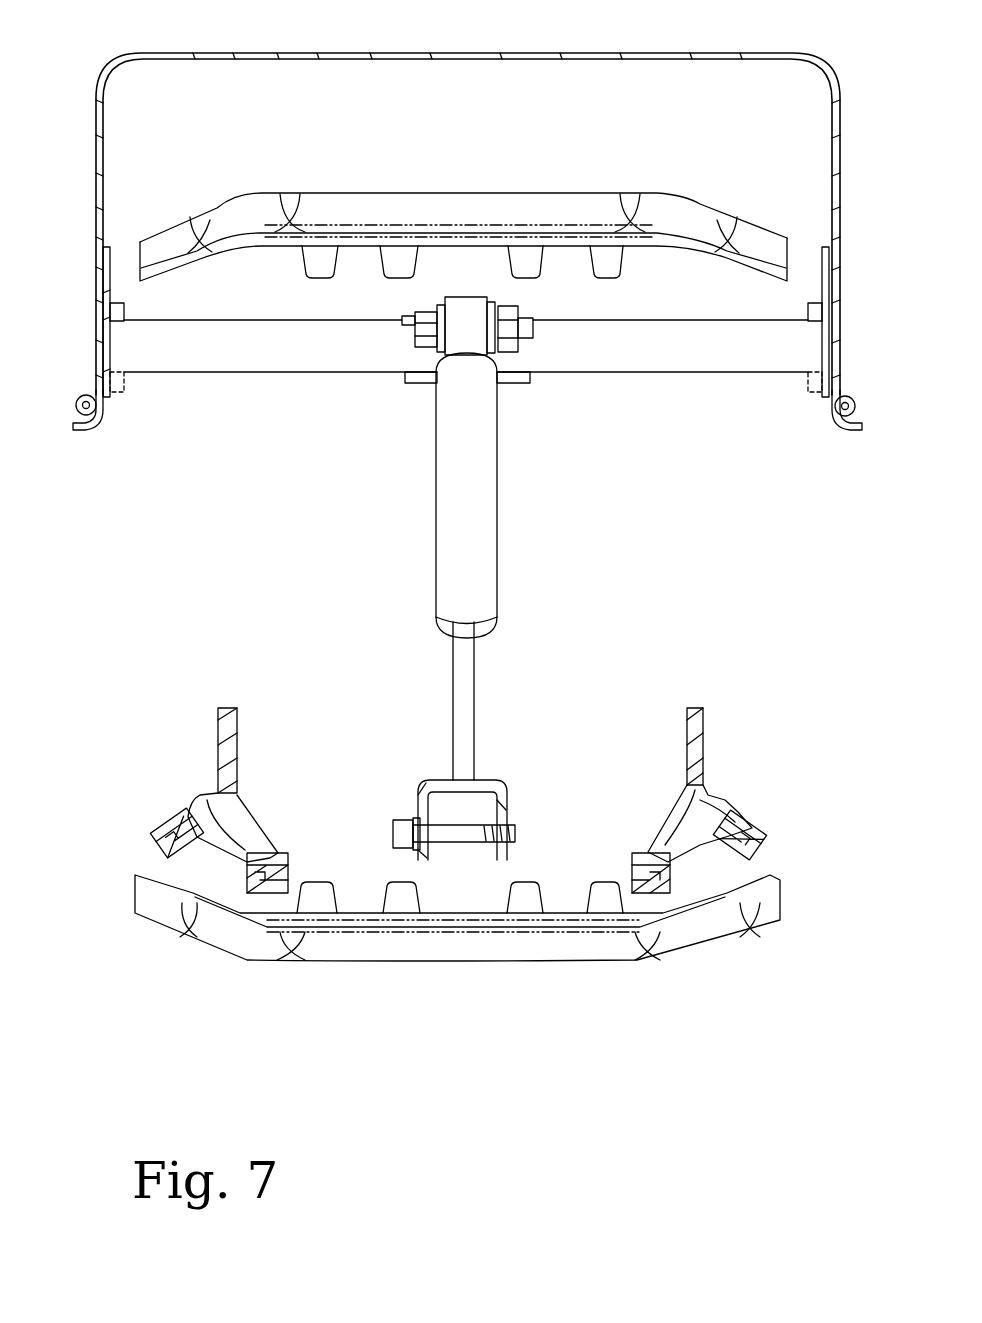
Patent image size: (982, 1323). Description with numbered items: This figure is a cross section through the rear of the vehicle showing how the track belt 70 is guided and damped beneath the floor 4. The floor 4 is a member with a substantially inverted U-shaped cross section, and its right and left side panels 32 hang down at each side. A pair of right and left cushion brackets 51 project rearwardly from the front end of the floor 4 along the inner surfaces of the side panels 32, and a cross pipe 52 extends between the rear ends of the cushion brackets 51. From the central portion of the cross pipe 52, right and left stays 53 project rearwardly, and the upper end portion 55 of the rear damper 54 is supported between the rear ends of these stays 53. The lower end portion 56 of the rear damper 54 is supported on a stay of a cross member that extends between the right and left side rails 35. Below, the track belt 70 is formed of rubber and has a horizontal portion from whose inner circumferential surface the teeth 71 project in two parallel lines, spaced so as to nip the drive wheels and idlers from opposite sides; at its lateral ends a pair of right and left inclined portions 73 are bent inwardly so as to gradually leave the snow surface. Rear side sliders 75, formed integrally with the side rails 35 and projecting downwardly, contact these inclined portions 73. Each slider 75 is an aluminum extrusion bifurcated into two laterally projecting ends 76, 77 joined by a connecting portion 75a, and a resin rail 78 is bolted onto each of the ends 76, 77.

The floor 4 is at (592, 53).
The side panel 32 is at (96, 165).
The cushion bracket 51 is at (110, 250).
The cross pipe 52 is at (677, 363).
The stay 53 is at (442, 315).
The rear damper 54 is at (495, 468).
The upper end portion 55 is at (458, 302).
The lower end portion 56 is at (492, 785).
The track belt 70 is at (443, 202).
The tooth 71 is at (395, 253).
The inclined portion 73 is at (217, 253).
The side rail 35 is at (220, 727).
The rear side slider 75 is at (240, 823).
The connecting portion 75a is at (685, 822).
The laterally projecting end 76 is at (635, 868).
The laterally projecting end 77 is at (752, 827).
The resin rail 78 is at (760, 852).